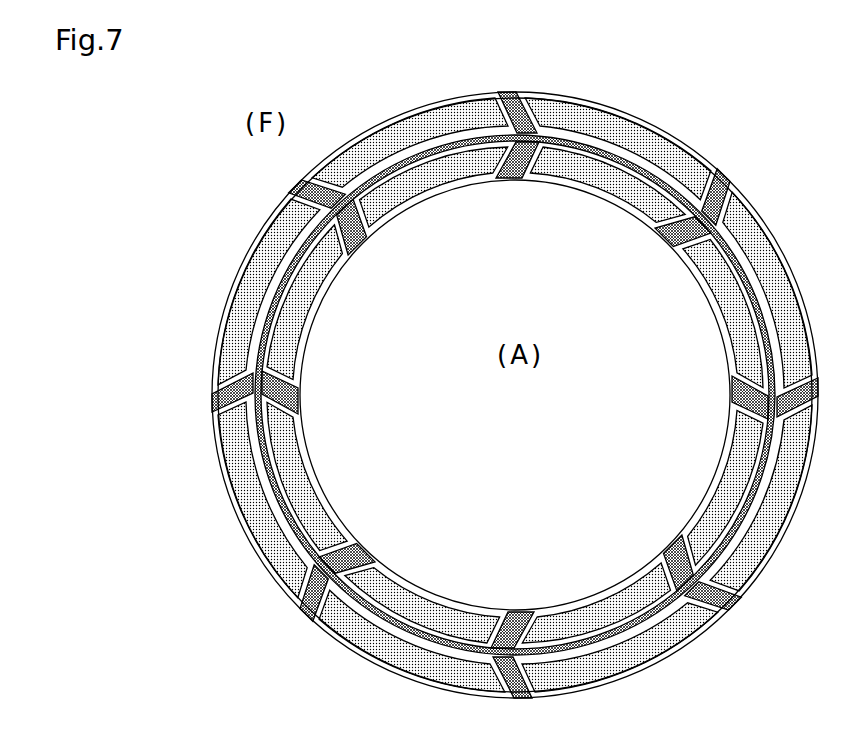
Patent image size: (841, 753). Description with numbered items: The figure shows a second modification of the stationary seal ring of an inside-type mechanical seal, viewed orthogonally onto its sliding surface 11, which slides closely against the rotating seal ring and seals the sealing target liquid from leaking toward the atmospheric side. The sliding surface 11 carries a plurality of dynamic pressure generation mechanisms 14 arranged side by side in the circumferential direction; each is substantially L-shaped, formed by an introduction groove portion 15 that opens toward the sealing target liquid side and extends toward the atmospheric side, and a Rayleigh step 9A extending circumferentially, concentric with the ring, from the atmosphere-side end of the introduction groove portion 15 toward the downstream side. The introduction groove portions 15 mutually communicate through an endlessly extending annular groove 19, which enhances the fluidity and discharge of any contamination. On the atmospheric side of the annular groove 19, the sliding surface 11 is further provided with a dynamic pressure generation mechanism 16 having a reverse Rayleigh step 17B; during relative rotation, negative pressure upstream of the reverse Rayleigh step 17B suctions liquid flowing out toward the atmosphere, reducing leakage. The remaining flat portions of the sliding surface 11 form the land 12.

The Rayleigh step 9A is at (430, 122).
The dynamic pressure generation mechanism 14 is at (499, 82).
The introduction groove portion 15 is at (513, 92).
The annular groove 19 is at (422, 160).
The reverse Rayleigh step 17B is at (515, 395).
The dynamic pressure generation mechanism 16 is at (587, 170).
The land 12 is at (727, 330).
The sliding surface 11 is at (730, 360).